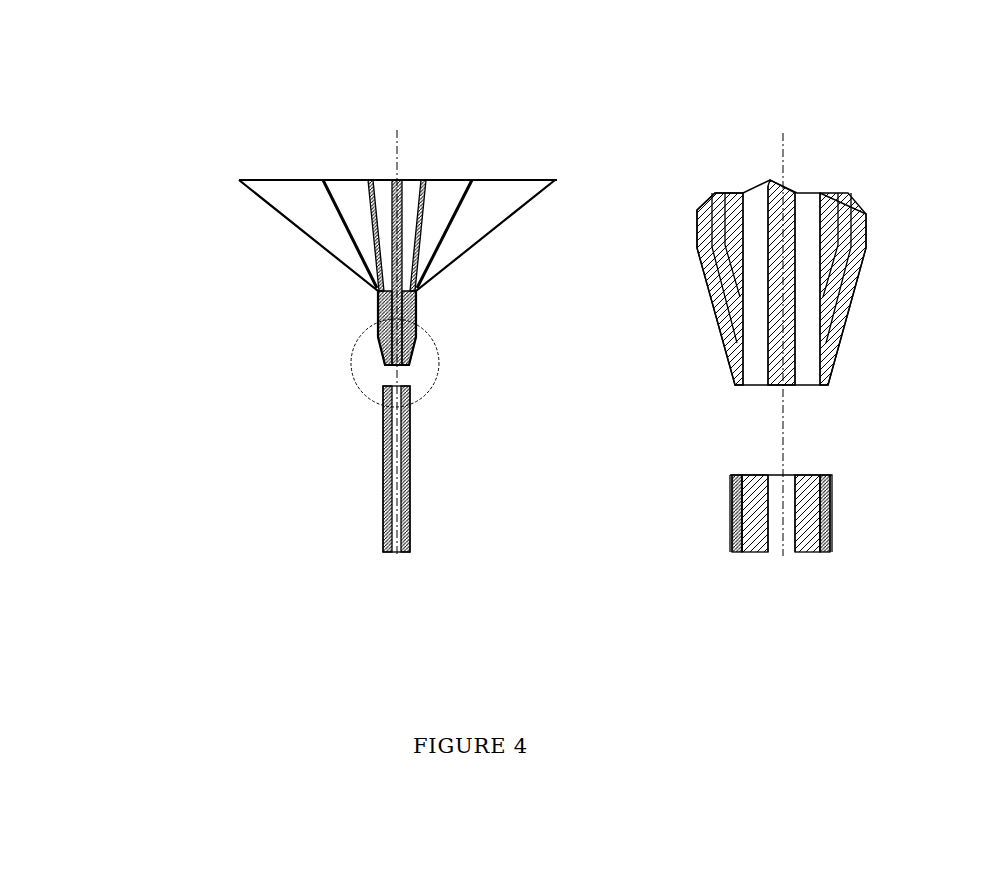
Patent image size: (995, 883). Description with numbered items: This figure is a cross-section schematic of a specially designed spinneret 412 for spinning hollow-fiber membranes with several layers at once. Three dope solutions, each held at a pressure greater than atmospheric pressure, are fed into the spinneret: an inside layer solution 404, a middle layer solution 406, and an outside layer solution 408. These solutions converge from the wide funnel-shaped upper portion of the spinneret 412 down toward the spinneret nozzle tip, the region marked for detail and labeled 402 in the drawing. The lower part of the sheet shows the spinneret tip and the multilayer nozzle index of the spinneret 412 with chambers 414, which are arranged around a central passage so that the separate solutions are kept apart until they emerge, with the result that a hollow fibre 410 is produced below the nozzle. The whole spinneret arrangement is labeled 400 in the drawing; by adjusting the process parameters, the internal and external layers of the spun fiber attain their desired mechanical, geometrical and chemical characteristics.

The spray nozzle assembly 400 is at (457, 334).
The central rod / detail A region 402 is at (415, 370).
The inside layer solution with P Patm 404 is at (383, 200).
The middle layer solution with P Patm 406 is at (356, 204).
The outside layer solution with P Patm 408 is at (318, 210).
The hollow fibre 410 is at (743, 513).
The spinneret 412 is at (352, 480).
The chambers 414 is at (750, 377).